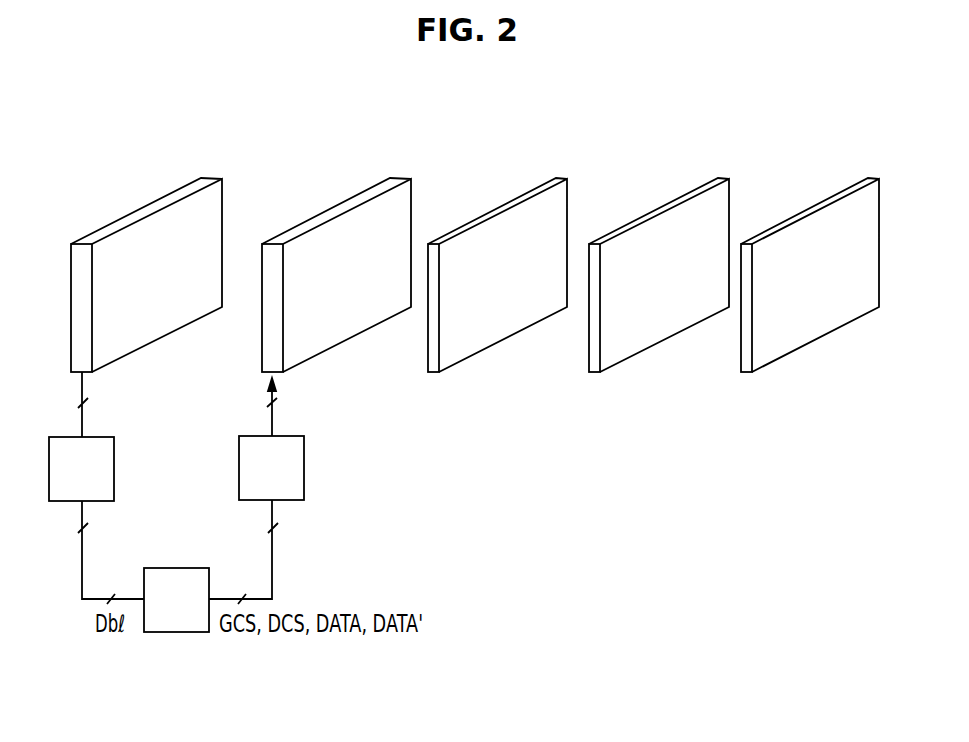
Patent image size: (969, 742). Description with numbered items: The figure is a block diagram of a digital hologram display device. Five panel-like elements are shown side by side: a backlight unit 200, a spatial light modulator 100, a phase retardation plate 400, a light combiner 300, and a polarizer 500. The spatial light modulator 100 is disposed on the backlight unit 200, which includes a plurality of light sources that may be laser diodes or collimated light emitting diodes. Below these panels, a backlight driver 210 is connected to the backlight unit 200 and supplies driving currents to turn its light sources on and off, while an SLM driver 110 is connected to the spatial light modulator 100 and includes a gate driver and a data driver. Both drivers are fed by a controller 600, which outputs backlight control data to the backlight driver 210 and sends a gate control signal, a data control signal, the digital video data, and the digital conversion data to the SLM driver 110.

The spatial light modulator 100 is at (373, 188).
The SLM driver 110 is at (304, 466).
The backlight unit 200 is at (187, 186).
The backlight driver 210 is at (114, 468).
The light combiner 300 is at (699, 188).
The phase retardation plate 400 is at (541, 188).
The polarizer 500 is at (850, 188).
The controller 600 is at (177, 632).